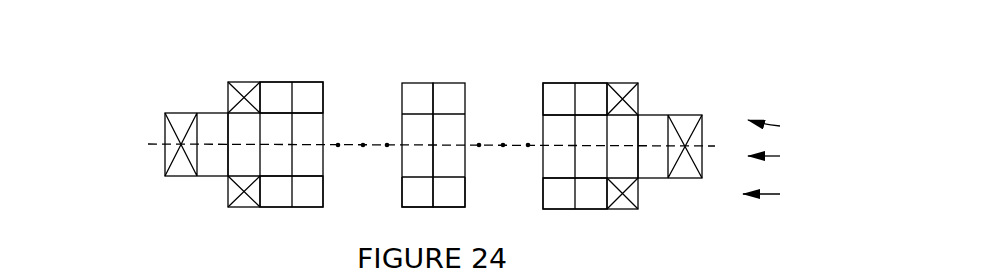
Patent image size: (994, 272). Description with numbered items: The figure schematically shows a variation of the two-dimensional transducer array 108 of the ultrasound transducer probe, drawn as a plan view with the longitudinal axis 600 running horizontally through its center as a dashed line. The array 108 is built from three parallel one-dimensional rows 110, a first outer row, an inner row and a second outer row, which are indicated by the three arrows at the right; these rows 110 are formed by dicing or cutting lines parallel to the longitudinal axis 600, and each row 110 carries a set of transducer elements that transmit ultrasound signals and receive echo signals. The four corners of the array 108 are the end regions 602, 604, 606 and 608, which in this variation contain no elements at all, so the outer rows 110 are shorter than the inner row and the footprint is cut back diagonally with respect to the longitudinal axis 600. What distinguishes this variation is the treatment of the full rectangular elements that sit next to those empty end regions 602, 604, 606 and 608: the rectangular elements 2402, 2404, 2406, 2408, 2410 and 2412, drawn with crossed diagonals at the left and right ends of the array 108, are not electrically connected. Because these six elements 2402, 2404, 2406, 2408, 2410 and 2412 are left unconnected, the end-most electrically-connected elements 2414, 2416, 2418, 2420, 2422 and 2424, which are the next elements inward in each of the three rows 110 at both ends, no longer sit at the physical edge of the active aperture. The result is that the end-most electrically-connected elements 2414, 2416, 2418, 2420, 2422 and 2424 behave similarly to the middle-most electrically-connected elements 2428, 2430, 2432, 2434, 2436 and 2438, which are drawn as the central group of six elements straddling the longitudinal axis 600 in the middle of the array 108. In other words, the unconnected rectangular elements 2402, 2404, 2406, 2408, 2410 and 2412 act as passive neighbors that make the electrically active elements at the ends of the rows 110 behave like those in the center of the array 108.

The two-dimensional transducer array 108 is at (116, 42).
The end region 602 is at (136, 72).
The end region 604 is at (175, 200).
The end region 606 is at (706, 66).
The end region 608 is at (706, 214).
The longitudinal axis 600 is at (152, 143).
The one-dimensional rows 110 is at (783, 160).
The rectangular element 2402 is at (178, 178).
The rectangular element 2404 is at (243, 82).
The rectangular element 2406 is at (622, 83).
The rectangular element 2408 is at (700, 138).
The rectangular element 2410 is at (622, 210).
The rectangular element 2412 is at (243, 208).
The end-most electrically-connected element 2414 is at (213, 113).
The end-most electrically-connected element 2416 is at (275, 82).
The end-most electrically-connected element 2418 is at (592, 83).
The end-most electrically-connected element 2420 is at (653, 116).
The end-most electrically-connected element 2422 is at (592, 210).
The end-most electrically-connected element 2424 is at (275, 208).
The middle-most electrically-connected element 2428 is at (402, 127).
The middle-most electrically-connected element 2430 is at (420, 83).
The middle-most electrically-connected element 2432 is at (448, 83).
The middle-most electrically-connected element 2434 is at (467, 127).
The middle-most electrically-connected element 2436 is at (448, 207).
The middle-most electrically-connected element 2438 is at (420, 207).